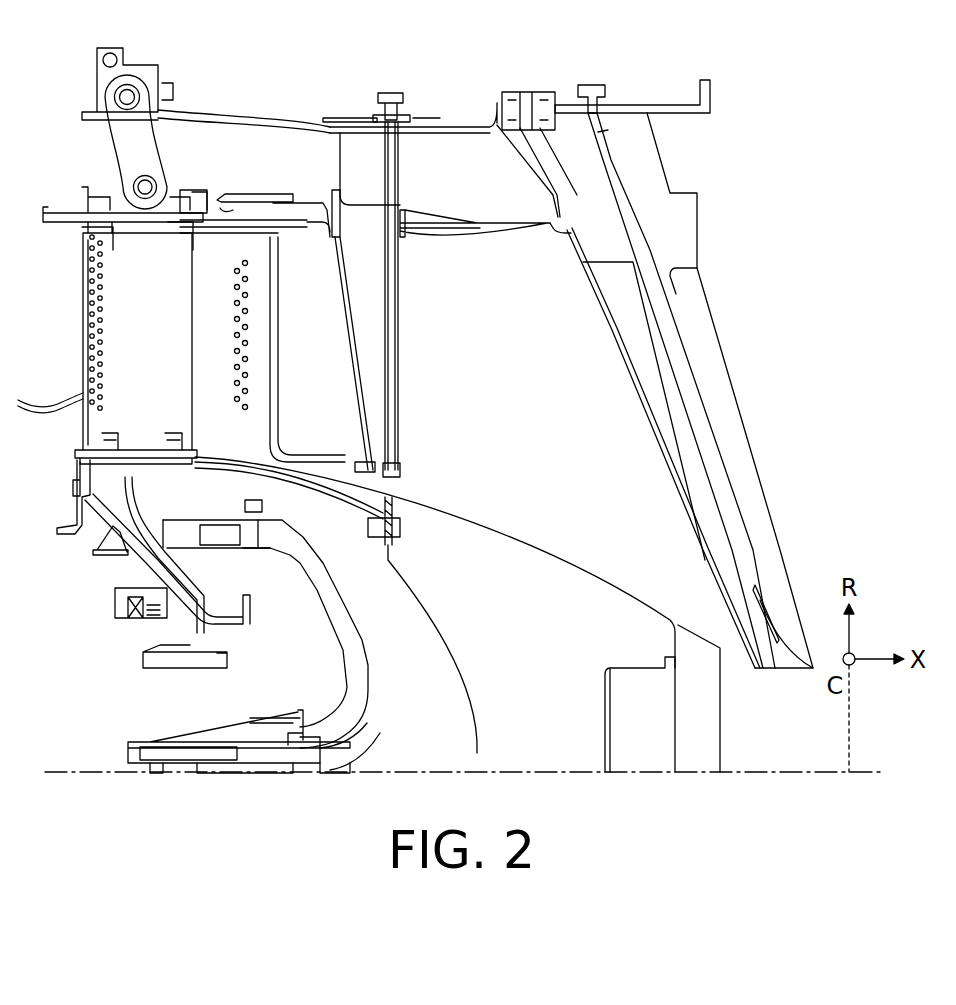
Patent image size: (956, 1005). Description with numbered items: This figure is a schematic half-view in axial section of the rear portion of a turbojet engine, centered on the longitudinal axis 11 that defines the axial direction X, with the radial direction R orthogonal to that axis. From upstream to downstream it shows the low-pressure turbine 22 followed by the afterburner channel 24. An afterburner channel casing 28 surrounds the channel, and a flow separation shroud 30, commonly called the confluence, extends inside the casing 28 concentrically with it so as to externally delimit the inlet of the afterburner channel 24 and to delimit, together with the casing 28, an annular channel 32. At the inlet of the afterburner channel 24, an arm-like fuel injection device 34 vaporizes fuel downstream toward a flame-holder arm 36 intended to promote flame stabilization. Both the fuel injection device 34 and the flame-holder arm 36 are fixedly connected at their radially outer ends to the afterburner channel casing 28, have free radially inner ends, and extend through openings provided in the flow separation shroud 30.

The longitudinal axis 11 is at (100, 770).
The low-pressure turbine 22 is at (64, 337).
The afterburner channel 24 is at (560, 468).
The afterburner channel casing 28 is at (668, 104).
The flow separation shroud 30 is at (450, 237).
The annular channel 32 is at (480, 181).
The fuel injection device 34 is at (400, 383).
The flame-holder arm 36 is at (717, 338).